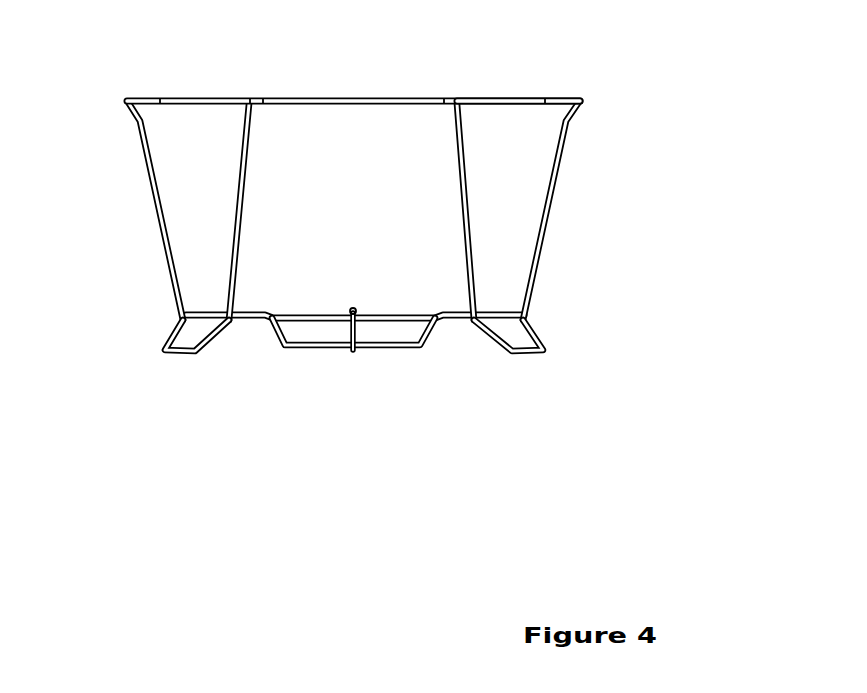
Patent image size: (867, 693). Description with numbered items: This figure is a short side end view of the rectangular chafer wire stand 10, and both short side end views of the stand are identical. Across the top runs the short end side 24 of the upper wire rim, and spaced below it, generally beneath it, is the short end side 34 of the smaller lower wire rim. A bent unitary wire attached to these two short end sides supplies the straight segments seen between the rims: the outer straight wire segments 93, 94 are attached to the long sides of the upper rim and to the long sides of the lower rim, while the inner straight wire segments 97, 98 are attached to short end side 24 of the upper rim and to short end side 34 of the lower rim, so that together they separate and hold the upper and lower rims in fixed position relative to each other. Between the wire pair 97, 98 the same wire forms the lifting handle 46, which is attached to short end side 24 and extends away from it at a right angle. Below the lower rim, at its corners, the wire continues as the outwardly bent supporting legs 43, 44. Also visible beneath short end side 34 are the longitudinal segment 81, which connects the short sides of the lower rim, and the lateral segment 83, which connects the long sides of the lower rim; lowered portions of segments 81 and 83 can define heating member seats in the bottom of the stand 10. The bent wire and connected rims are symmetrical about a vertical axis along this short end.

The chafer wire stand 10 is at (624, 123).
The short end side 24 is at (511, 98).
The short end side 34 is at (400, 316).
The supporting leg 43 is at (179, 358).
The supporting leg 44 is at (540, 355).
The lifting handle 46 is at (362, 101).
The longitudinal segment 81 is at (353, 343).
The lateral segment 83 is at (398, 347).
The straight wire segment 93 is at (158, 195).
The straight wire segment 94 is at (548, 194).
The straight wire segment 97 is at (237, 223).
The straight wire segment 98 is at (465, 228).